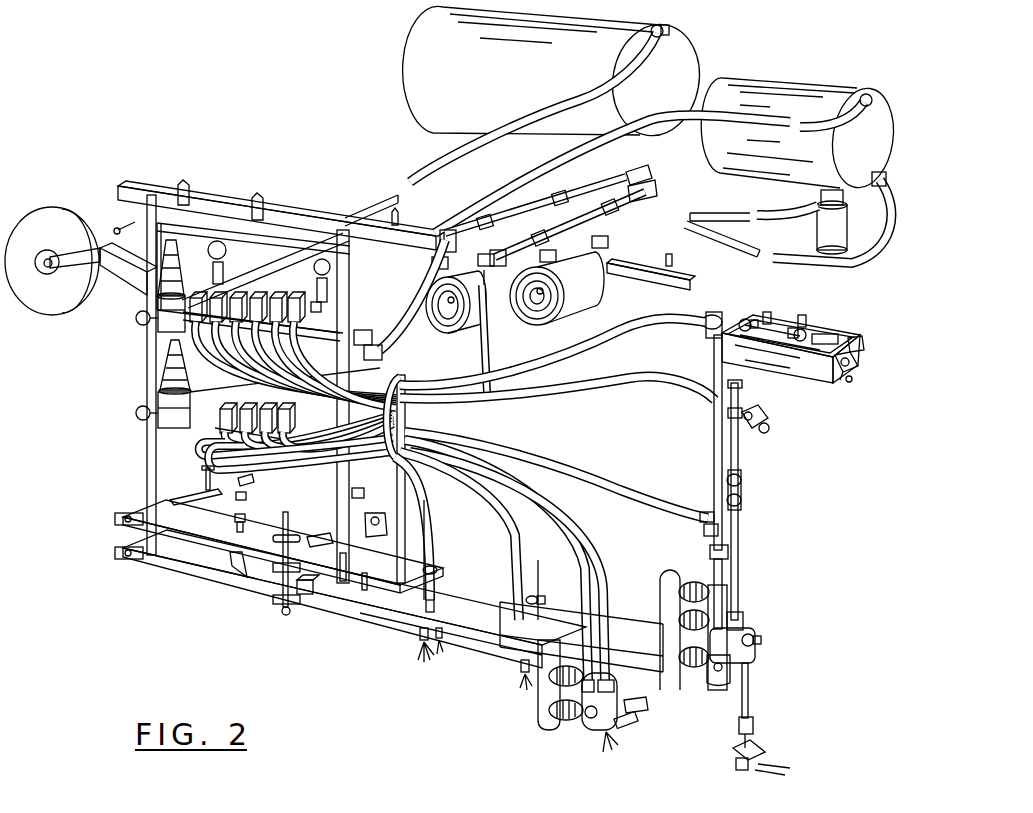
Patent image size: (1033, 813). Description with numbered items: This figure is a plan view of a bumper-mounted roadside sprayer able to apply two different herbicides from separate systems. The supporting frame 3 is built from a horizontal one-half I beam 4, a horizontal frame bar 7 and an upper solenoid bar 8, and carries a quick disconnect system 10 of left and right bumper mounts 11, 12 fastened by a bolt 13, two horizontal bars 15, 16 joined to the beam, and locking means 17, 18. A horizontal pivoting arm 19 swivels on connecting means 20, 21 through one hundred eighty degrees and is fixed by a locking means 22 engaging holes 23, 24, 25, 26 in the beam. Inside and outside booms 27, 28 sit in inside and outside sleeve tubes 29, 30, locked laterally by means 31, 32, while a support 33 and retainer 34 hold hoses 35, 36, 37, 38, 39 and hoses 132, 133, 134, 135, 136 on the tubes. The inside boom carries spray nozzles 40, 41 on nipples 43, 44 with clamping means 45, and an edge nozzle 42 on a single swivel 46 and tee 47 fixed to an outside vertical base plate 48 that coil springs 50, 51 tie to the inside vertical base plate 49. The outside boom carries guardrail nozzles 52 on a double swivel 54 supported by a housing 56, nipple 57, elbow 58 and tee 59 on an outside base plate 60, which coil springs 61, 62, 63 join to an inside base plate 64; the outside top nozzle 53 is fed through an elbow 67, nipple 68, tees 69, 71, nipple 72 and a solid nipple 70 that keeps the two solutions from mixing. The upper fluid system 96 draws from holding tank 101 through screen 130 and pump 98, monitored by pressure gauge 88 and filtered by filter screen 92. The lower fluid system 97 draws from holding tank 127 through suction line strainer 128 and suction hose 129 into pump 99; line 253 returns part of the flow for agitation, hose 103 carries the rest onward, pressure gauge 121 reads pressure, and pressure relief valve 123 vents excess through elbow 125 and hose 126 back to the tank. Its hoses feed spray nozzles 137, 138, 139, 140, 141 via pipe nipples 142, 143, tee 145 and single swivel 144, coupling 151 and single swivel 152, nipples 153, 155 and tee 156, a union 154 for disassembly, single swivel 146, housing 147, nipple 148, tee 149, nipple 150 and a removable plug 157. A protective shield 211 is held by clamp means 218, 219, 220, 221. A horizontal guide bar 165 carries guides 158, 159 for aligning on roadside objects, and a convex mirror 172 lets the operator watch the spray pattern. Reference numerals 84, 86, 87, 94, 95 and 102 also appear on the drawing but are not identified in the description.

The supporting frame 3 is at (193, 584).
The one-half I beam 4 is at (189, 526).
The horizontal frame bar 7 is at (272, 245).
The upper horizontal solenoid bar 8 is at (311, 305).
The quick disconnect system 10 is at (198, 473).
The left bumper mount 11 is at (386, 518).
The right bumper mount 12 is at (242, 500).
The bolt 13 is at (247, 490).
The horizontal bar 15 is at (200, 493).
The horizontal bar 16 is at (322, 535).
The locking means 17 is at (364, 510).
The locking means 18 is at (204, 470).
The horizontal pivoting arm 19 is at (297, 599).
The connecting means 20 is at (235, 528).
The connecting means 21 is at (230, 556).
The locking means 22 is at (284, 533).
The hole 23 is at (270, 570).
The hole 24 is at (282, 610).
The hole 25 is at (115, 521).
The hole 26 is at (115, 554).
The inside boom 27 is at (475, 652).
The outside boom 28 is at (565, 626).
The inside sleeve tube 29 is at (372, 614).
The outside sleeve tube 30 is at (390, 606).
The locking means 31 is at (340, 586).
The locking means 32 is at (362, 602).
The support 33 is at (406, 531).
The retainer 34 is at (408, 380).
The hose 35 is at (434, 555).
The hose 36 is at (512, 570).
The hose 37 is at (572, 570).
The hose 38 is at (630, 537).
The hose 39 is at (612, 486).
The spray nozzle 40 is at (416, 656).
The spray nozzle 41 is at (521, 670).
The edge nozzle 42 is at (614, 746).
The nipple 43 is at (415, 640).
The nipple 44 is at (508, 640).
The clamping means 45 is at (437, 570).
The single swivel 46 is at (616, 728).
The tee 47 is at (604, 730).
The outside vertical base plate 48 is at (586, 728).
The inside vertical base plate 49 is at (547, 720).
The coil spring 50 is at (568, 722).
The coil spring 51 is at (548, 698).
The guardrail nozzle 52 is at (766, 765).
The outside top nozzle 53 is at (851, 381).
The double swivel 54 is at (736, 752).
The housing 56 is at (754, 725).
The nipple 57 is at (749, 695).
The elbow 58 is at (752, 660).
The tee 59 is at (739, 675).
The outside base plate 60 is at (713, 682).
The coil spring 61 is at (690, 674).
The coil spring 62 is at (673, 612).
The coil spring 63 is at (695, 585).
The inside base plate 64 is at (667, 576).
The elbow 67 is at (712, 346).
The nipple 68 is at (715, 430).
The tee 69 is at (709, 512).
The solid nipple 70 is at (709, 530).
The tee 71 is at (726, 553).
The nipple 72 is at (723, 577).
The pressure regulator 84 is at (180, 275).
The adjusting knob 86 is at (136, 318).
The hose 87 is at (434, 160).
The pressure gauge 88 is at (313, 273).
The filter screen 92 is at (364, 338).
The elbow fitting 94 is at (379, 358).
The hose 95 is at (396, 323).
The fluid system 96 is at (138, 320).
The second fluid system 97 is at (143, 446).
The pump 98 is at (451, 320).
The pump 99 is at (575, 304).
The holding tank 101 is at (505, 83).
The tube 102 is at (546, 200).
The hose 103 is at (489, 350).
The pressure gauge 121 is at (208, 250).
The pressure relief valve 123 is at (168, 372).
The elbow 125 is at (137, 412).
The hose 126 is at (648, 128).
The holding tank 127 is at (794, 153).
The suction line strainer 128 is at (816, 235).
The suction hose 129 is at (716, 238).
The screen 130 is at (627, 175).
The hose 132 is at (628, 328).
The hose 133 is at (642, 380).
The hose 134 is at (588, 560).
The hose 135 is at (519, 530).
The hose 136 is at (443, 508).
The spray nozzle 137 is at (858, 368).
The spray nozzle 138 is at (768, 432).
The spray nozzle 139 is at (636, 708).
The spray nozzle 140 is at (523, 681).
The spray nozzle 141 is at (437, 656).
The pipe nipple 142 is at (440, 588).
The pipe nipple 143 is at (544, 608).
The single swivel 144 is at (638, 719).
The tee 145 is at (614, 688).
The single swivel 146 is at (863, 346).
The housing 147 is at (835, 331).
The nipple 148 is at (783, 330).
The tee 149 is at (712, 318).
The nipple 150 is at (741, 388).
The coupling 151 is at (741, 422).
The single swivel 152 is at (766, 420).
The nipple 153 is at (741, 460).
The union 154 is at (743, 493).
The nipple 155 is at (740, 523).
The tee 156 is at (742, 628).
The plug 157 is at (760, 645).
The guide 158 is at (178, 182).
The guide 159 is at (254, 194).
The horizontal guide bar 165 is at (308, 222).
The convex mirror 172 is at (60, 208).
The protective shield 211 is at (823, 400).
The clamp means 218 is at (750, 322).
The clamp means 219 is at (767, 312).
The clamp means 220 is at (801, 315).
The clamp means 221 is at (812, 330).
The line 253 is at (700, 211).